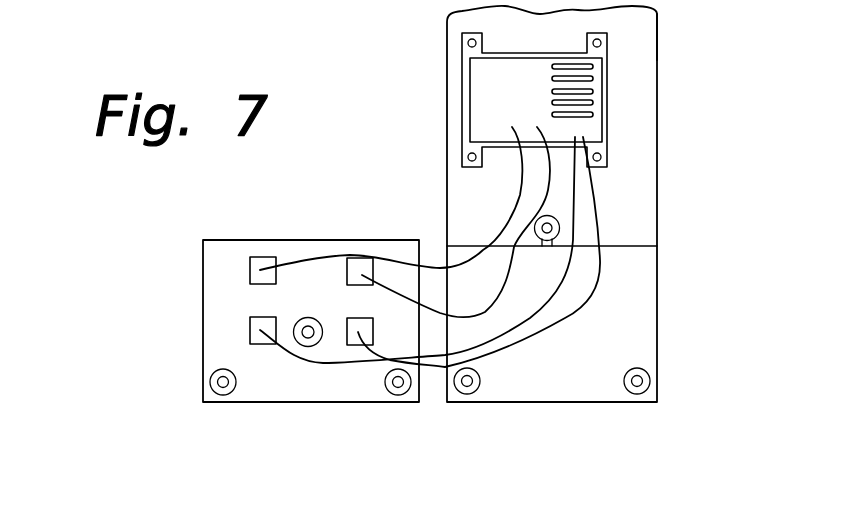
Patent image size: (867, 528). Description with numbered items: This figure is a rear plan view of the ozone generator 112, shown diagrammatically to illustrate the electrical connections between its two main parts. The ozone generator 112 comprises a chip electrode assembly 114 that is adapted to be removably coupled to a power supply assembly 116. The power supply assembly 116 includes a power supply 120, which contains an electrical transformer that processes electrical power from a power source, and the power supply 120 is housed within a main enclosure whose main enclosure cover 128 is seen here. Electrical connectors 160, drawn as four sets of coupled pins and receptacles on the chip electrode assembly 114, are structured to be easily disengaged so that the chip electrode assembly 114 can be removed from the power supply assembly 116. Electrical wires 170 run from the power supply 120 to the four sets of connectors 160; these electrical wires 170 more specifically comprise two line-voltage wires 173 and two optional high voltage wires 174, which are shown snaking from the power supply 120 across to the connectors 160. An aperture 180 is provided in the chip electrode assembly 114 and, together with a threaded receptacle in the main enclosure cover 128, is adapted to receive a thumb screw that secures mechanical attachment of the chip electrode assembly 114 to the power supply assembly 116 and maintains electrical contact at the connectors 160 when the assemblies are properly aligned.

The ozone generator 112 is at (322, 70).
The chip electrode assembly 114 is at (197, 318).
The power supply assembly 116 is at (668, 104).
The power supply 120 is at (475, 80).
The main enclosure cover 128 is at (658, 52).
The electrical connectors 160 is at (260, 256).
The electrical wires 170 is at (600, 284).
The 120V wires 173 is at (555, 306).
The high voltage wires 174 is at (545, 190).
The apertures 180 is at (310, 346).